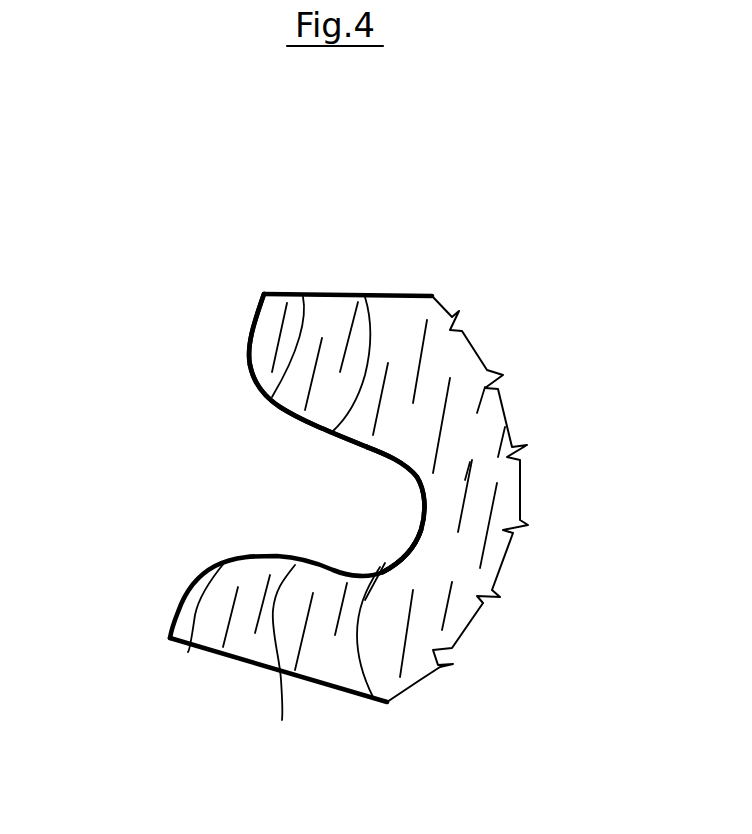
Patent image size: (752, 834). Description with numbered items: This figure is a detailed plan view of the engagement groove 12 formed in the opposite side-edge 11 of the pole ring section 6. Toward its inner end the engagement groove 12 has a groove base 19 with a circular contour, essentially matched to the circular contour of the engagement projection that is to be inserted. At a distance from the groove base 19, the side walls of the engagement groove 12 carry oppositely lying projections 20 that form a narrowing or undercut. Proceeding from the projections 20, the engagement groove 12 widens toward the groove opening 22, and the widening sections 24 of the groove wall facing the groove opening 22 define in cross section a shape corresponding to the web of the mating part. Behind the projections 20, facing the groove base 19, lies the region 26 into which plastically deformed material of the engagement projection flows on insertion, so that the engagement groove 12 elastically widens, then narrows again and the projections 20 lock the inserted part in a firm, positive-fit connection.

The pole ring section 6 is at (462, 365).
The side-edge 11 is at (250, 313).
The engagement groove 12 is at (347, 510).
The groove base 19 is at (423, 538).
The projections 20 is at (365, 297).
The groove opening 22 is at (235, 420).
The widening sections 24 is at (303, 297).
The region 26 is at (373, 697).